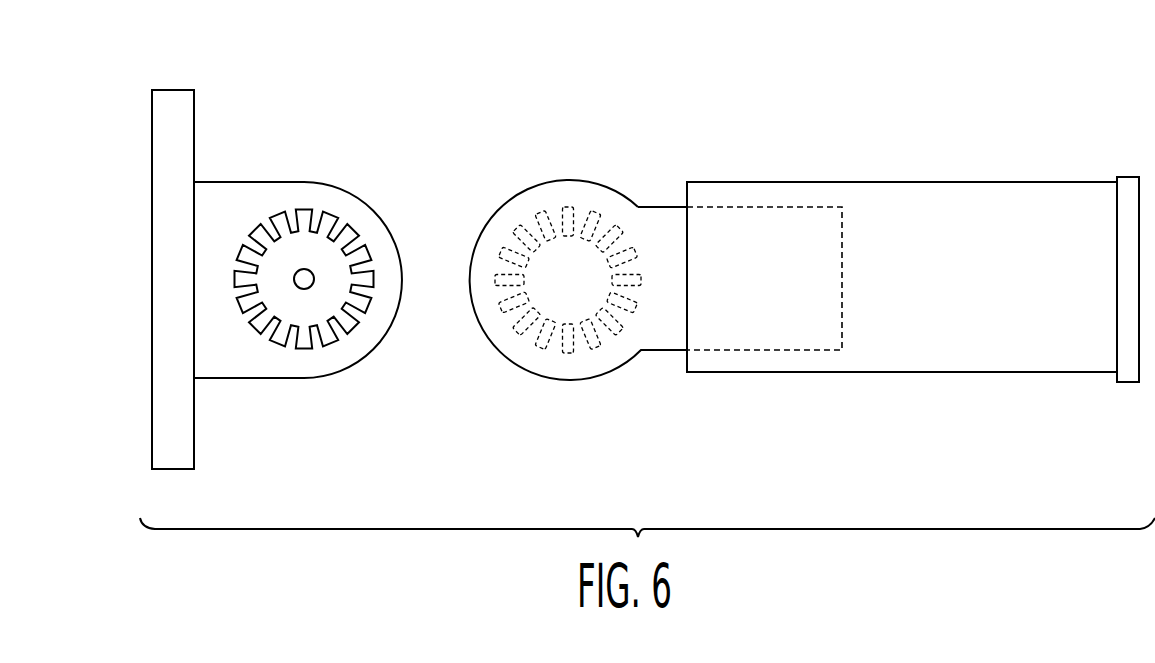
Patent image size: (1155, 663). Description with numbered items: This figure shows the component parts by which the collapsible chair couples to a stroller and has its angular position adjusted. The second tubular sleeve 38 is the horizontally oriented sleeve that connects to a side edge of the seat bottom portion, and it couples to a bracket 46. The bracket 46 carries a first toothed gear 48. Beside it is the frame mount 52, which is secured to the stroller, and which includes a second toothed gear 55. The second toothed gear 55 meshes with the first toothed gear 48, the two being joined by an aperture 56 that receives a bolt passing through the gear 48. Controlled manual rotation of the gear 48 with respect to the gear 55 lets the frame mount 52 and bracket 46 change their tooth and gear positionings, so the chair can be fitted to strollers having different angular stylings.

The second tubular sleeve 38 is at (1021, 289).
The bracket 46 is at (768, 207).
The first toothed gear 48 is at (542, 212).
The frame mount 52 is at (192, 108).
The second toothed gear 55 is at (362, 312).
The aperture 56 is at (308, 288).